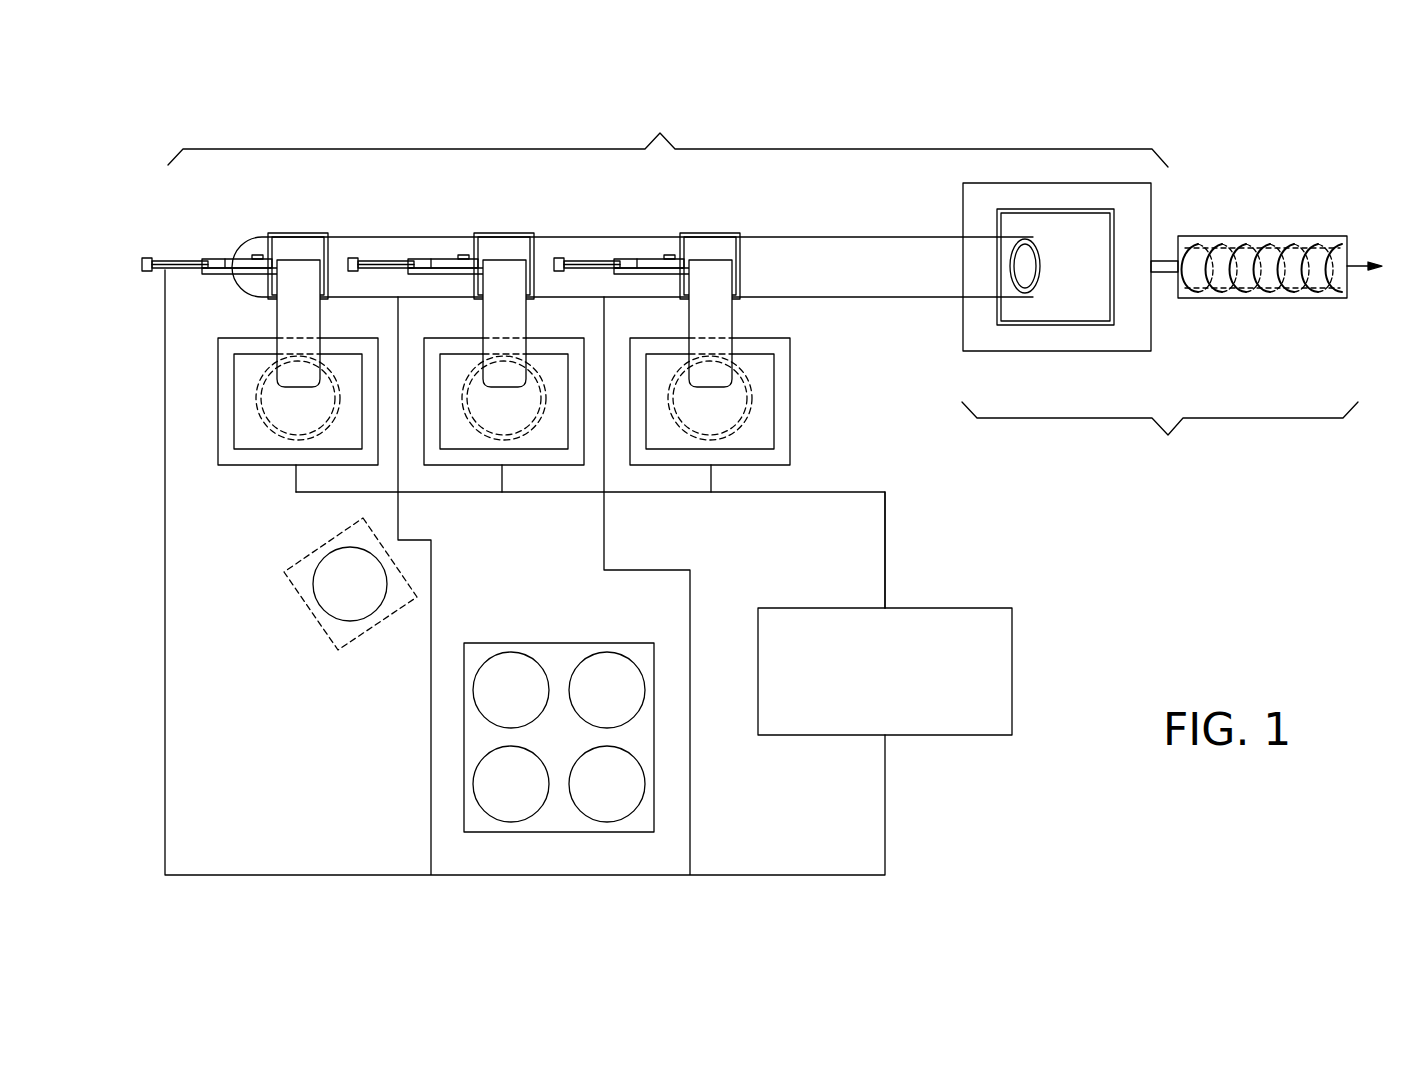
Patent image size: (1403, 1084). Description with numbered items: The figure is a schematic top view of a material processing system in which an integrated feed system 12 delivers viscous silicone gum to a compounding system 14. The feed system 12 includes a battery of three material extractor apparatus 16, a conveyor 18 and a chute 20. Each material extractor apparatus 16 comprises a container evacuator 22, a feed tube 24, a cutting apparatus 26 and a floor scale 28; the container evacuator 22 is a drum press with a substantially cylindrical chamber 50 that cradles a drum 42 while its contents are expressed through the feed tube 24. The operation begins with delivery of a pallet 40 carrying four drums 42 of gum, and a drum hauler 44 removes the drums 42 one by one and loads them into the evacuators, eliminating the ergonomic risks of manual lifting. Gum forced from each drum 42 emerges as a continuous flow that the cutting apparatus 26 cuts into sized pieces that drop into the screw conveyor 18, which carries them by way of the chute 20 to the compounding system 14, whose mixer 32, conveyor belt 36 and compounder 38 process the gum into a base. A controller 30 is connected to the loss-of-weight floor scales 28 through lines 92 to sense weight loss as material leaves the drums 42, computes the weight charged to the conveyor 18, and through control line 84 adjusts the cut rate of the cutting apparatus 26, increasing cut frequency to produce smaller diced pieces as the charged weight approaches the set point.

The feed system 12 is at (668, 136).
The compounding system 14 is at (1160, 432).
The material extractor apparatus 16 is at (505, 360).
The conveyor 18 is at (828, 237).
The chute 20 is at (997, 214).
The container evacuator 22 is at (236, 450).
The feed tube 24 is at (320, 318).
The cutting apparatus 26 is at (213, 259).
The floor scale 28 is at (218, 403).
The controller 30 is at (1012, 652).
The mixer 32 is at (1030, 352).
The conveyor belt 36 is at (1165, 258).
The compounder 38 is at (1262, 236).
The pallet 40 is at (464, 712).
The drum 42 is at (285, 440).
The drum hauler 44 is at (336, 645).
The chamber 50 is at (268, 372).
The control line 84 is at (165, 405).
The lines 92 is at (885, 518).